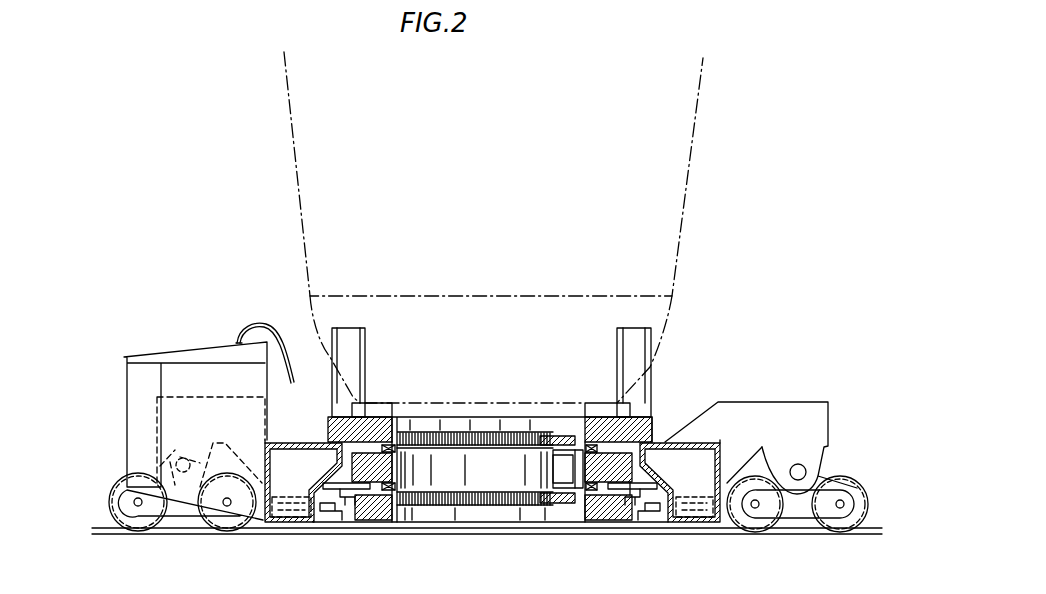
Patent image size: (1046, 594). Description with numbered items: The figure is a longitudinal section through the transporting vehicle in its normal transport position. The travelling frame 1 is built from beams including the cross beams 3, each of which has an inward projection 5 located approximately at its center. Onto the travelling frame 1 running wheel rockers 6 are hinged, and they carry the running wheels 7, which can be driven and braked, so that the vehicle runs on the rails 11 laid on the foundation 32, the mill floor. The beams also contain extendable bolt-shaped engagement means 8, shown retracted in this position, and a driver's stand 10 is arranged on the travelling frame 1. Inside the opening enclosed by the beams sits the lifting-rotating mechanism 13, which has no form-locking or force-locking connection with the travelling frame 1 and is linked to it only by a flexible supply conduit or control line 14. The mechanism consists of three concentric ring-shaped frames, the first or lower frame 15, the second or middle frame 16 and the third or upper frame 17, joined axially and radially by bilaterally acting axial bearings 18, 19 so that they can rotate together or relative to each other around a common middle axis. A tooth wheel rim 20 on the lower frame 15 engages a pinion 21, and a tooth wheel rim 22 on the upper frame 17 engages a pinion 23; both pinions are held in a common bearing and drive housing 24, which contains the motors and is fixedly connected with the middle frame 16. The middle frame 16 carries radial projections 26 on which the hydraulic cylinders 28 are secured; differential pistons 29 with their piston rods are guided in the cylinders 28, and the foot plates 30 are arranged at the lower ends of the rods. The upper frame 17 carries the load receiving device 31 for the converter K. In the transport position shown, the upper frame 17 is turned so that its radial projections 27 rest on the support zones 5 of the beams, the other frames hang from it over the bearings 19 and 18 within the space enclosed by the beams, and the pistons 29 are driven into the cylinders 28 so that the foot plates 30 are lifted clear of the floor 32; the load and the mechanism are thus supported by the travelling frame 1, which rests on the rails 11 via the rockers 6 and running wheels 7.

The travelling frame 1 is at (730, 400).
The cross beams 3 is at (308, 440).
The inward projections 5 is at (325, 453).
The running wheel rockers 6 is at (177, 510).
The running wheels 7 is at (132, 527).
The bolt-shaped engagement means 8 is at (276, 522).
The driver's stand 10 is at (188, 382).
The rails 11 is at (103, 528).
The lifting-rotating mechanism 13 is at (491, 481).
The flexible supply conduit or control line 14 is at (250, 328).
The first or lower frame 15 is at (377, 505).
The second or middle frame 16 is at (356, 505).
The third or upper frame 17 is at (345, 418).
The axial bearing 18 is at (391, 522).
The axial bearing 19 is at (393, 422).
The tooth wheel rim 20 is at (428, 522).
The pinion 21 is at (556, 490).
The tooth wheel rim 22 is at (442, 427).
The pinion 23 is at (550, 452).
The bearing and drive housing 24 is at (546, 458).
The radial projections 26 is at (653, 500).
The radial projections 27 is at (650, 427).
The hydraulic cylinders 28 is at (347, 340).
The differential pistons 29 is at (348, 492).
The foot plates 30 is at (330, 508).
The load receiving device 31 is at (600, 403).
The foundation 32 is at (483, 532).
The converter K is at (495, 204).